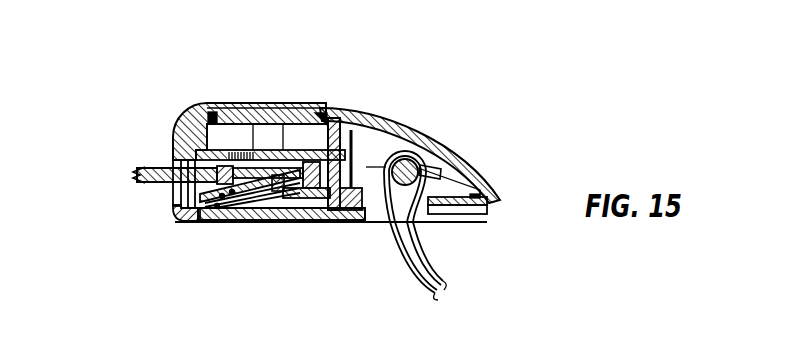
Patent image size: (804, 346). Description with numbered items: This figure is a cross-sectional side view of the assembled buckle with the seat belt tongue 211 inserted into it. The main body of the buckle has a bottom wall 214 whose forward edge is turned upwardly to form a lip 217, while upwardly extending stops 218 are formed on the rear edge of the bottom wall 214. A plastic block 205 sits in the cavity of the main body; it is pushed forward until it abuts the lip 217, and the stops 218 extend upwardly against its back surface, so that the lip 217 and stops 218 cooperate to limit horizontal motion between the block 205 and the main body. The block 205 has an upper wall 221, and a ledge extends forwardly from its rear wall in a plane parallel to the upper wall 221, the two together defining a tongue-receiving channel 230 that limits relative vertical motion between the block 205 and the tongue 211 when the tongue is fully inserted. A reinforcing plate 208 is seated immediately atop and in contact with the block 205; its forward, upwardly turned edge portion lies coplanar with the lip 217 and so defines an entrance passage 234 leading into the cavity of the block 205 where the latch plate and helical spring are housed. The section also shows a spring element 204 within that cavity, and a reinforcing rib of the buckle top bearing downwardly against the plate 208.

The spring 204 is at (247, 198).
The plastic block 205 is at (333, 220).
The plate 208 is at (208, 125).
The seat belt tongue 211 is at (157, 168).
The bottom wall 214 is at (213, 222).
The lip 217 is at (181, 208).
The stops 218 is at (384, 130).
The upper wall 221 is at (292, 230).
The tongue-receiving channel 230 is at (294, 218).
The entrance passage 234 is at (170, 193).